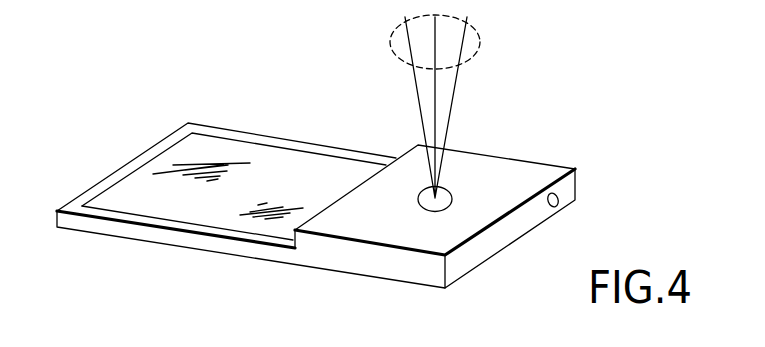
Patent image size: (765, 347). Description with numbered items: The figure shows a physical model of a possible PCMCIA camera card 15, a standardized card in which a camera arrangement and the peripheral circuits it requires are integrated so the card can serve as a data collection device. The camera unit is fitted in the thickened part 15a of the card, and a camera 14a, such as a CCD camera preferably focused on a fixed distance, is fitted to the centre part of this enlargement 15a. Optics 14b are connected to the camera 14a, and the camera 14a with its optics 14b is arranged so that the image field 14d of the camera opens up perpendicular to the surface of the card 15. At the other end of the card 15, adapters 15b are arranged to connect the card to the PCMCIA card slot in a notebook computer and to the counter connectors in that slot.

The PCMCIA card 15 is at (303, 131).
The adapters 15b is at (138, 134).
The thickened part of the card 15a is at (532, 161).
The optics 14b is at (440, 210).
The camera 14a is at (557, 206).
The image field 14d is at (455, 88).